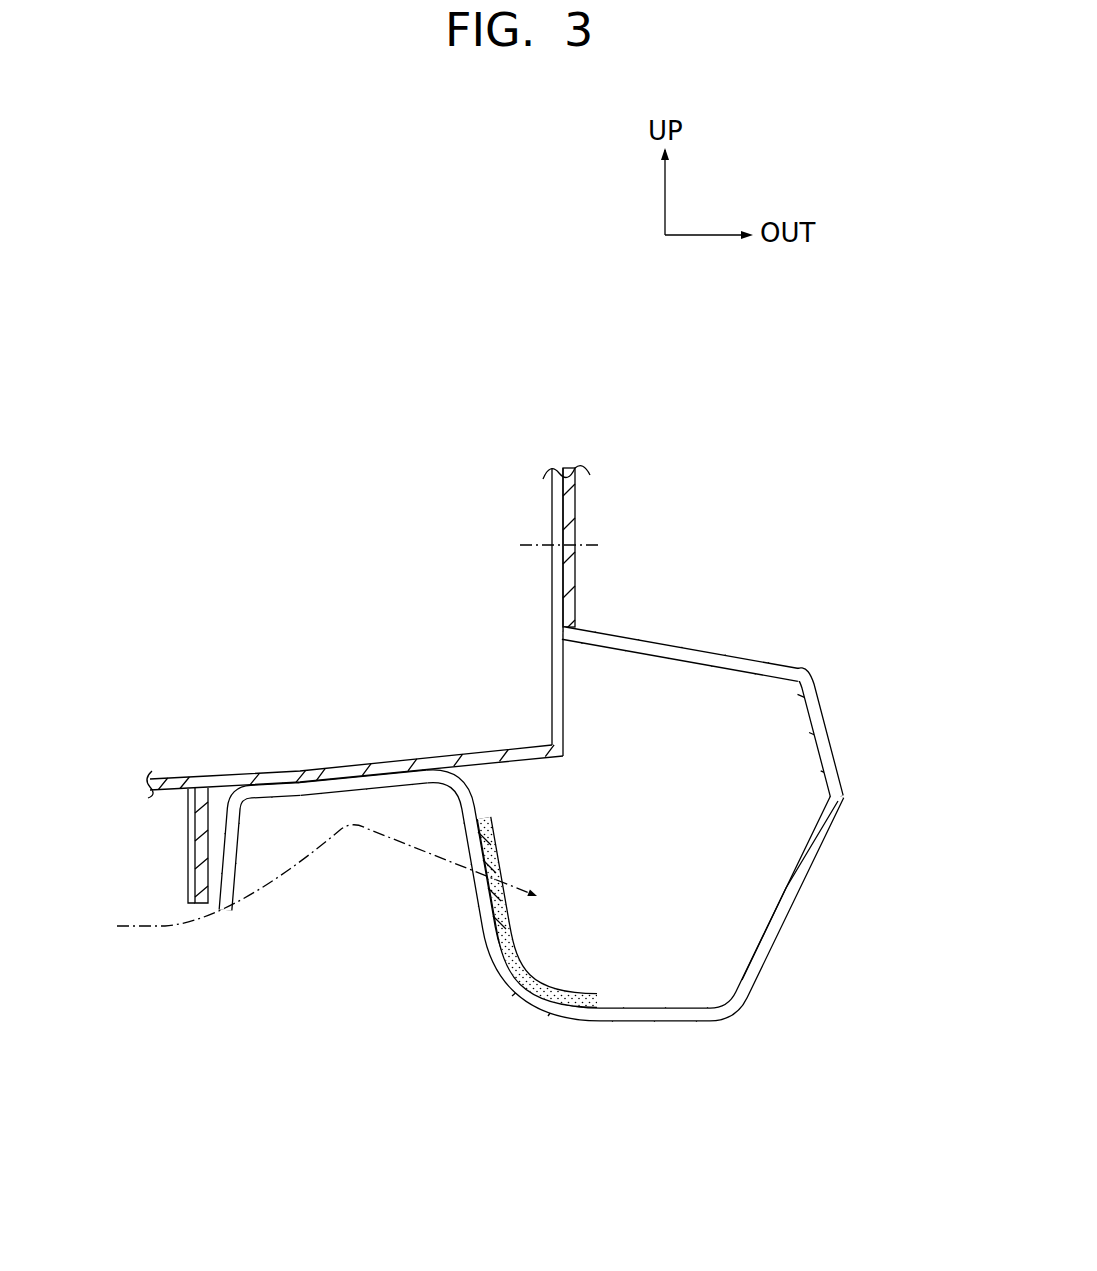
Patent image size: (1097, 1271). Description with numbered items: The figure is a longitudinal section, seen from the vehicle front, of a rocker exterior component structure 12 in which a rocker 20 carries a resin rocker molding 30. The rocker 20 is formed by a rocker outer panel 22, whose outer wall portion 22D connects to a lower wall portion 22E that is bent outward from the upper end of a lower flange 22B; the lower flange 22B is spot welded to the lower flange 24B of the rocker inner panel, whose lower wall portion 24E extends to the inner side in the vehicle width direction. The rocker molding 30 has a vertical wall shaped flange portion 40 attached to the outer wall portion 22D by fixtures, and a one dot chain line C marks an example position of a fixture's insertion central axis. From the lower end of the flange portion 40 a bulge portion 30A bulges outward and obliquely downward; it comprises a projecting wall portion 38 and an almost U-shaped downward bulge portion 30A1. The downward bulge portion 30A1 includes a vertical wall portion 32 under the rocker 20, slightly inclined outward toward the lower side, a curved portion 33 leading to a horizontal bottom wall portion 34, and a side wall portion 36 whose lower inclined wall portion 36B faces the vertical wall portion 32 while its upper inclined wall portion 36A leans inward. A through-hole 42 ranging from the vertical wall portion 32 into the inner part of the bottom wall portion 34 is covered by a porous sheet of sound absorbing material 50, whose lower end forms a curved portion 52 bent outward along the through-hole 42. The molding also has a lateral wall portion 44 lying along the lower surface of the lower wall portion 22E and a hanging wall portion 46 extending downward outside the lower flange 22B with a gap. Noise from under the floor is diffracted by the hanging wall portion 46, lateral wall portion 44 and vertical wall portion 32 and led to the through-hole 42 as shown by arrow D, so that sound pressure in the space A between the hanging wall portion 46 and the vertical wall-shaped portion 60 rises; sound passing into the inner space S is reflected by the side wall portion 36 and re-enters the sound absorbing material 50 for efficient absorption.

The vehicle pillar structure 12 is at (667, 330).
The rocker 20 is at (578, 680).
The rocker outer panel 22 is at (576, 498).
The lower flange 22B is at (204, 790).
The outer wall portion 22D is at (552, 578).
The lower wall portion 22E is at (392, 768).
The lower flange 24B is at (188, 834).
The lower wall portion 24E is at (153, 791).
The rocker molding 30 is at (653, 570).
The bulge portion 30A is at (727, 633).
The downward bulge portion 30A1 is at (849, 811).
The vertical wall portion 32 is at (452, 810).
The curved portion 33 is at (510, 992).
The bottom wall portion 34 is at (660, 1023).
The side wall portion 36 is at (824, 840).
The upper inclined wall portion 36A is at (822, 718).
The lower inclined wall portion 36B is at (786, 918).
The projecting wall portion 38 is at (662, 636).
The flange portion 40 is at (577, 540).
The through-hole 42 is at (470, 832).
The lateral wall portion 44 is at (345, 795).
The hanging wall portion 46 is at (237, 875).
The sound absorbing material 50 is at (501, 877).
The curved portion 52 is at (518, 985).
The vertical wall-shaped portion 60 is at (462, 897).
The space A is at (352, 820).
The one dot chain line C is at (530, 545).
The arrow D is at (337, 882).
The inner space S is at (708, 957).